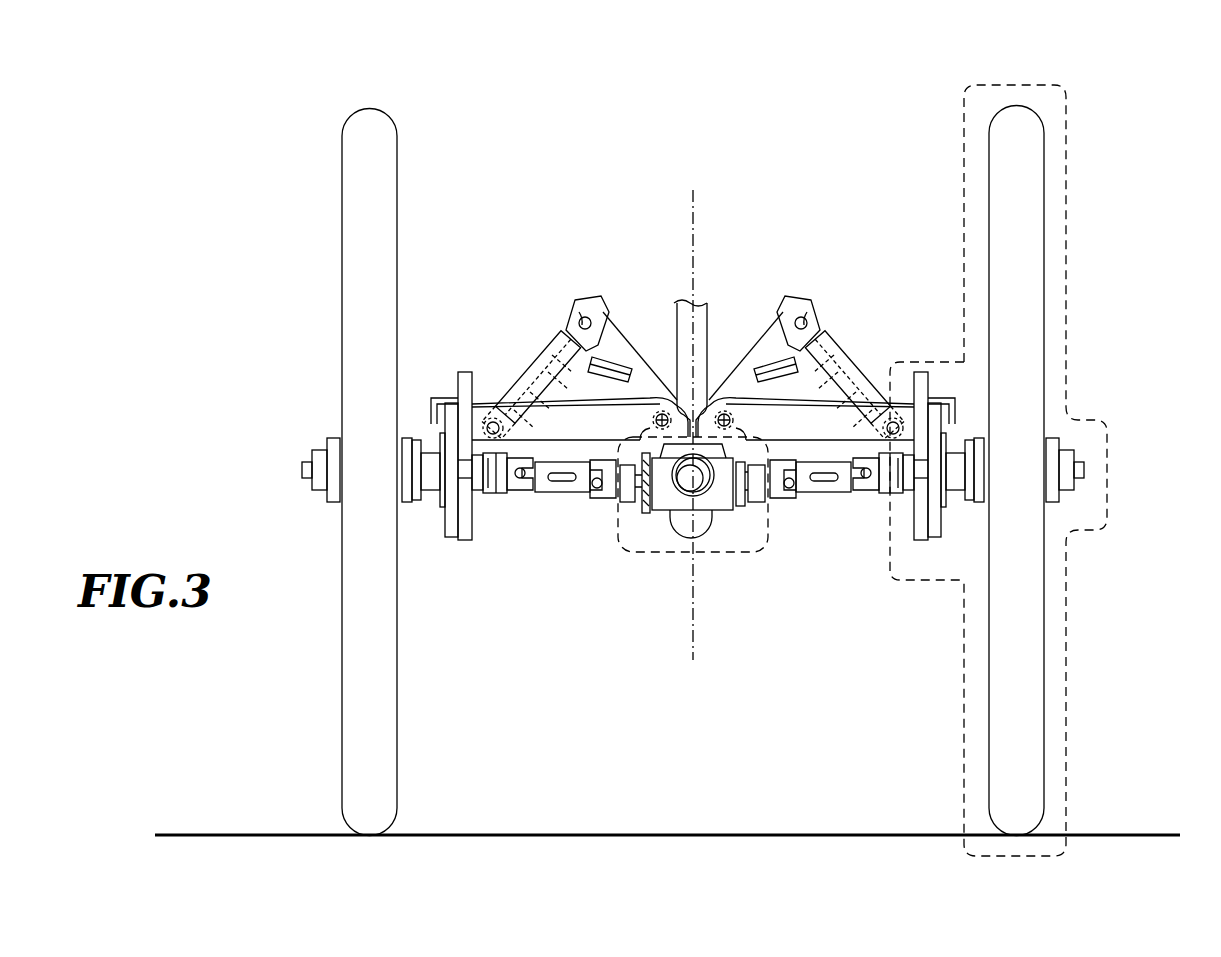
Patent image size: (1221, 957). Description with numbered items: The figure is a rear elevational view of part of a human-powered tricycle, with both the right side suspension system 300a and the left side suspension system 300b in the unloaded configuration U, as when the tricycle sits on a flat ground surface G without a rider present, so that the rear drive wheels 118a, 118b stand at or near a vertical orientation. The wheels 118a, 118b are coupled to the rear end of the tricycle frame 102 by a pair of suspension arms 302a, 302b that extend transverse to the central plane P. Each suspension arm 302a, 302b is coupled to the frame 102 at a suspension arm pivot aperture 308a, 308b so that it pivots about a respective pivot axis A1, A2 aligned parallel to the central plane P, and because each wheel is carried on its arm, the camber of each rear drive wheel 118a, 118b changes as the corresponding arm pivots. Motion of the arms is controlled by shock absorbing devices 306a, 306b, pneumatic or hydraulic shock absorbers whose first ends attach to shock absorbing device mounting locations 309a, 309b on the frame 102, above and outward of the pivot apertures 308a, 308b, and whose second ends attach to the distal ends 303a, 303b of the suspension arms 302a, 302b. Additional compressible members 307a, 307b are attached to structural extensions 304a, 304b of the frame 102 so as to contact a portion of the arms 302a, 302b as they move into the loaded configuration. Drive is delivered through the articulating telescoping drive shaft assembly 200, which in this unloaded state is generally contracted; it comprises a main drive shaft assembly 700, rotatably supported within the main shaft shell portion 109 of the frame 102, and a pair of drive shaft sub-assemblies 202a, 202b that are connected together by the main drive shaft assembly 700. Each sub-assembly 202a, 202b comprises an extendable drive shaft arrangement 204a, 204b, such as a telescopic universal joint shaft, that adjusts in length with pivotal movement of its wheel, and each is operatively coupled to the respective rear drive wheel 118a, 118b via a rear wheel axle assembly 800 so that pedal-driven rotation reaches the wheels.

The rear drive wheel 118a is at (1033, 170).
The rear drive wheel 118b is at (388, 172).
The tricycle frame 102 is at (702, 308).
The main shaft shell portion 109 is at (666, 501).
The articulating telescoping drive shaft assembly 200 is at (796, 588).
The drive shaft sub-assembly 202a is at (798, 519).
The drive shaft sub-assembly 202b is at (586, 519).
The extendable drive shaft arrangement 204a is at (805, 494).
The extendable drive shaft arrangement 204b is at (568, 494).
The right side suspension system 300a is at (886, 366).
The left side suspension system 300b is at (494, 368).
The suspension arm 302a is at (819, 441).
The suspension arm 302b is at (566, 441).
The distal end 303a is at (920, 396).
The distal end 303b is at (464, 396).
The structural extension 304a is at (803, 303).
The structural extension 304b is at (592, 298).
The shock absorbing device 306a is at (861, 356).
The shock absorbing device 306b is at (519, 362).
The compressible member 307a is at (778, 375).
The compressible member 307b is at (604, 372).
The suspension arm pivot aperture 308a is at (730, 418).
The suspension arm pivot aperture 308b is at (656, 418).
The shock absorbing device mounting location 309a is at (806, 308).
The shock absorbing device mounting location 309b is at (582, 306).
The main drive shaft assembly 700 is at (706, 553).
The rear wheel axle assembly 800 is at (1066, 590).
The pivot axis A1 is at (731, 421).
The pivot axis A2 is at (655, 421).
The central plane P is at (697, 628).
The unloaded configuration U is at (470, 541).
The ground surface G is at (1122, 835).